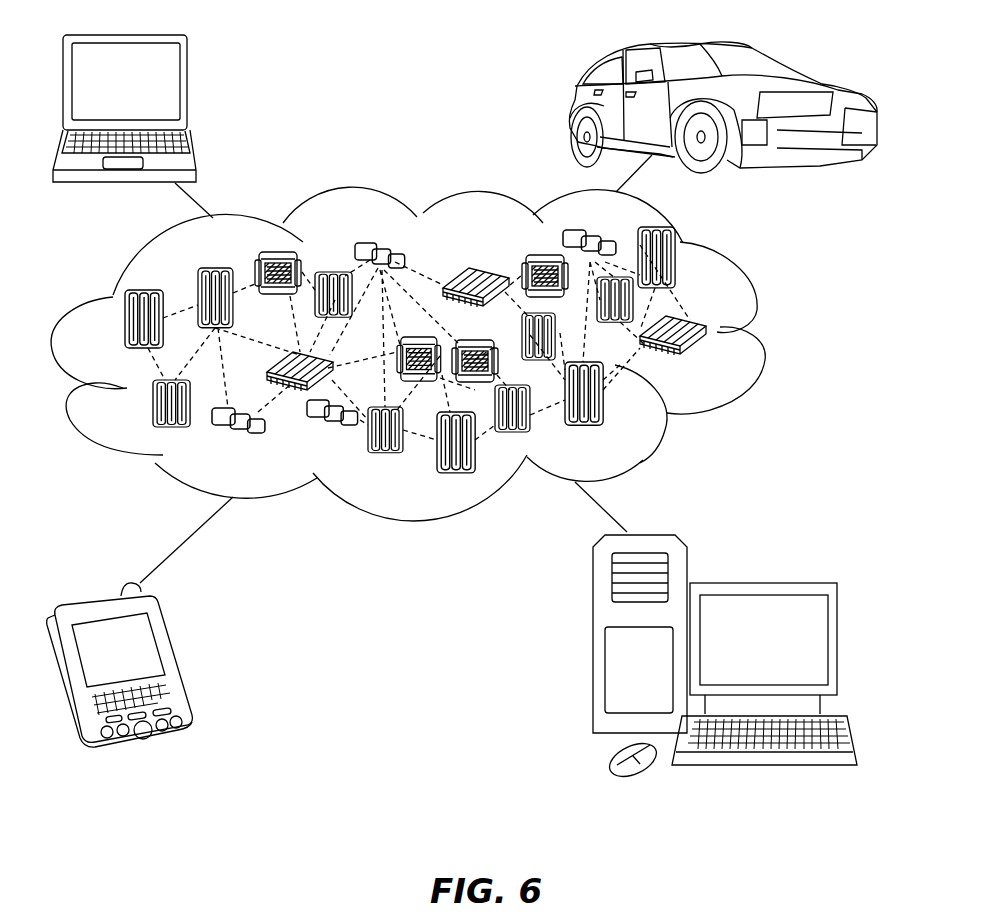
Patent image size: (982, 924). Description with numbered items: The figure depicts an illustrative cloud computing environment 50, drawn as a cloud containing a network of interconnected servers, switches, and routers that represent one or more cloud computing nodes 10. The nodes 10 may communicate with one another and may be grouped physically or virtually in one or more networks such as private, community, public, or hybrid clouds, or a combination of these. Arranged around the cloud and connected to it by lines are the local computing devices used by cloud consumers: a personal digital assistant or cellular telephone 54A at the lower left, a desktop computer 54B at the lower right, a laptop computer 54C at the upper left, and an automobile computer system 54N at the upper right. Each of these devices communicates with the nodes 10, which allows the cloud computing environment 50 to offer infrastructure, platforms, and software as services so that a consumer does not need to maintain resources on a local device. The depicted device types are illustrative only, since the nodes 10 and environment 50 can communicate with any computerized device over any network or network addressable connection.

The cloud computing node 10 is at (708, 356).
The cloud computing environment 50 is at (762, 334).
The personal digital assistant or cellular telephone 54A is at (178, 662).
The desktop computer 54B is at (762, 583).
The laptop computer 54C is at (190, 90).
The automobile computer system 54N is at (569, 107).